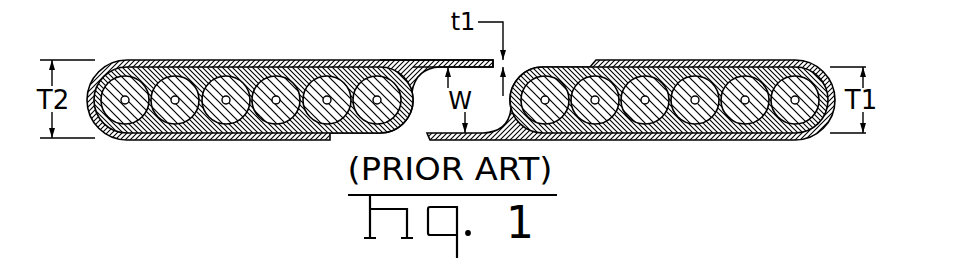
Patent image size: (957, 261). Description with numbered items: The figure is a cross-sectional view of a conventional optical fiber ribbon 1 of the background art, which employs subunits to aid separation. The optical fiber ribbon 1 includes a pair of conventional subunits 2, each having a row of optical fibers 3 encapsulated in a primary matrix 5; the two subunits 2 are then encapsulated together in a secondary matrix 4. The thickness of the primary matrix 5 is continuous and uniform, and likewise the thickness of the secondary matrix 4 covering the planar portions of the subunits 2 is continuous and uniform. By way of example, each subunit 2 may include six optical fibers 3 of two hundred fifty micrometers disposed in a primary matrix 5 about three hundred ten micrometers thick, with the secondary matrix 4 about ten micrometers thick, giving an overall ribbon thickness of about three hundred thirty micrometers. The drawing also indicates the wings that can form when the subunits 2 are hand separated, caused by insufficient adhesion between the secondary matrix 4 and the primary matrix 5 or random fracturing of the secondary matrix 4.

The optical fiber ribbon 1 is at (455, 70).
The subunit 2 is at (245, 67).
The optical fiber 3 is at (113, 64).
The secondary matrix 4 is at (333, 62).
The primary matrix 5 is at (188, 63).